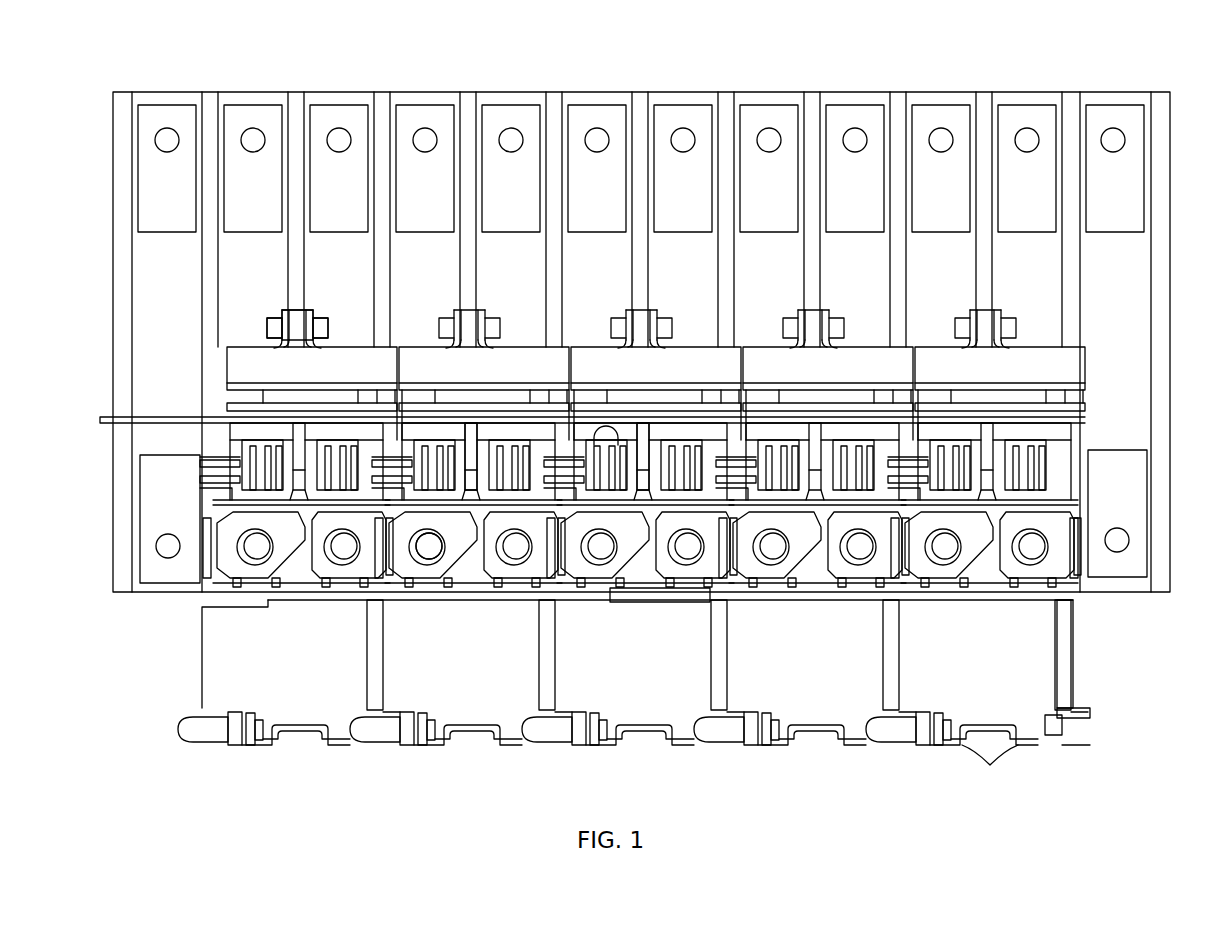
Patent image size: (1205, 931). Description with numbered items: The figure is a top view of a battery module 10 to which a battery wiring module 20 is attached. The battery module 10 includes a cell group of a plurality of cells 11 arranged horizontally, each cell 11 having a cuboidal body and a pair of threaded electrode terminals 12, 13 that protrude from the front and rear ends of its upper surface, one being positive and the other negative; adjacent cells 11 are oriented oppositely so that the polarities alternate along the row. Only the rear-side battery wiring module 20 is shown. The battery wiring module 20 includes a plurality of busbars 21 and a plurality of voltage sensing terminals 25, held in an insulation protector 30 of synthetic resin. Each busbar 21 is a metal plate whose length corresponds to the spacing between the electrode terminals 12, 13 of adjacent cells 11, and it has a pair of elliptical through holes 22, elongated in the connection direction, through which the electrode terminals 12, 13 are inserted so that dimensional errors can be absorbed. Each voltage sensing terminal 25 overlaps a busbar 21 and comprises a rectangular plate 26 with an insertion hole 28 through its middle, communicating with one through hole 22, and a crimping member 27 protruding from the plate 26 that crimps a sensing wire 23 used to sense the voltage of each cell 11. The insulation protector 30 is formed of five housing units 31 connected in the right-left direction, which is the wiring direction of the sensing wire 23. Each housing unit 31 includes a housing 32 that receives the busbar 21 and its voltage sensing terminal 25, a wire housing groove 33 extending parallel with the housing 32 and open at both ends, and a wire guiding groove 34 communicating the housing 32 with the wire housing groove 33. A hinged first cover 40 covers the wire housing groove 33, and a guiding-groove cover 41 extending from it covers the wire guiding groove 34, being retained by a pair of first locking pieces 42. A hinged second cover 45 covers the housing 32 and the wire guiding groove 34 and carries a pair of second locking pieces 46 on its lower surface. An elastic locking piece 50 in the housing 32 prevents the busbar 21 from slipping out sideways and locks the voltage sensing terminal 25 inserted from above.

The battery module 10 is at (94, 128).
The cell 11 is at (182, 98).
The electrode terminal 12 is at (252, 138).
The electrode terminal 13 is at (166, 138).
The battery wiring module 20 is at (638, 623).
The busbar 21 is at (313, 560).
The through hole 22 is at (254, 550).
The sensing wire 23 is at (99, 416).
The voltage sensing terminal 25 is at (510, 797).
The plate 26 is at (440, 552).
The crimping member 27 is at (477, 492).
The insertion hole 28 is at (428, 552).
The insulation protector 30 is at (636, 710).
The housing unit 31 is at (318, 757).
The housing 32 is at (640, 582).
The wire housing groove 33 is at (606, 432).
The wire guiding groove 34 is at (648, 500).
The first cover 40 is at (242, 358).
The guiding-groove cover 41 is at (296, 323).
The first locking piece 42 is at (330, 318).
The second cover 45 is at (1040, 640).
The second locking piece 46 is at (988, 764).
The elastic locking piece 50 is at (960, 516).